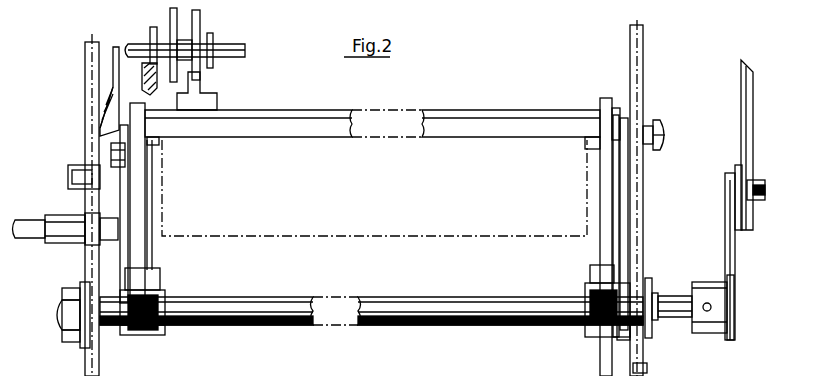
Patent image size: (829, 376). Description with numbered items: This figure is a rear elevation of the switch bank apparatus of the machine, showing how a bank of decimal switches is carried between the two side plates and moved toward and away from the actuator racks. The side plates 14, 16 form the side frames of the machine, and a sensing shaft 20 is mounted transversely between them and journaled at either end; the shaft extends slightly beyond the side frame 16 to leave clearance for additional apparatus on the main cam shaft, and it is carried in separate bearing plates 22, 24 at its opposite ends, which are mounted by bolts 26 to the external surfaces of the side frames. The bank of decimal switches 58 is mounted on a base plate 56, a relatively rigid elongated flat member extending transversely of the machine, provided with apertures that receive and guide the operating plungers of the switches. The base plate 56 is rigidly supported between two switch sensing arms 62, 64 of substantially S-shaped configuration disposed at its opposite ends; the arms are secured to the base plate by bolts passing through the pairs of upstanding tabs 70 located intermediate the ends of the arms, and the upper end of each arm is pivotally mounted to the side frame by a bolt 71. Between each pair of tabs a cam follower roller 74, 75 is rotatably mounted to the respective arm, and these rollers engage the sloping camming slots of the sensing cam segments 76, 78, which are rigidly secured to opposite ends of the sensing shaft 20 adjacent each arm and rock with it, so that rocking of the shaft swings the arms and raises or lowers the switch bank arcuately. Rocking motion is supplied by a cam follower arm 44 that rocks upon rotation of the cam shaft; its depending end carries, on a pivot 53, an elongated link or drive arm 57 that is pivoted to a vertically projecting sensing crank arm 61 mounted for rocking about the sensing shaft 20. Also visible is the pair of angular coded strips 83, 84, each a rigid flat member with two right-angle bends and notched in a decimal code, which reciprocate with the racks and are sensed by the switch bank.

The side plate 14 is at (92, 42).
The side plate 16 is at (637, 80).
The sensing shaft 20 is at (690, 292).
The bearing plate 22 is at (645, 340).
The bearing plate 24 is at (86, 342).
The bolt 26 is at (657, 290).
The cam follower arm 44 is at (750, 120).
The pivot 53 is at (755, 180).
The base plate 56 is at (463, 110).
The drive arm 57 is at (738, 170).
The decimal switches 58 is at (511, 142).
The sensing crank arm 61 is at (737, 262).
The switch sensing arm 62 is at (610, 213).
The switch sensing arm 64 is at (138, 178).
The upstanding tabs 70 is at (136, 104).
The bolt 71 is at (662, 137).
The cam follower roller 74 is at (612, 152).
The cam follower roller 75 is at (118, 145).
The sensing cam segment 76 is at (625, 243).
The sensing cam segment 78 is at (125, 255).
The coded strip 83 is at (213, 104).
The coded strip 84 is at (180, 104).